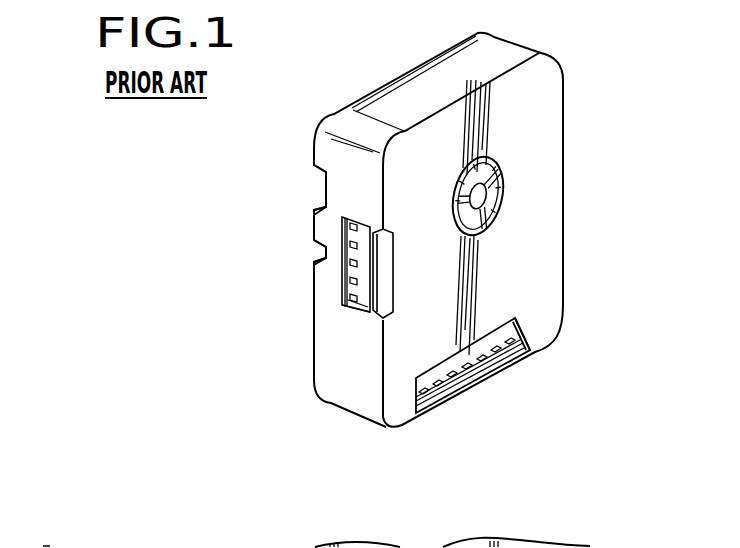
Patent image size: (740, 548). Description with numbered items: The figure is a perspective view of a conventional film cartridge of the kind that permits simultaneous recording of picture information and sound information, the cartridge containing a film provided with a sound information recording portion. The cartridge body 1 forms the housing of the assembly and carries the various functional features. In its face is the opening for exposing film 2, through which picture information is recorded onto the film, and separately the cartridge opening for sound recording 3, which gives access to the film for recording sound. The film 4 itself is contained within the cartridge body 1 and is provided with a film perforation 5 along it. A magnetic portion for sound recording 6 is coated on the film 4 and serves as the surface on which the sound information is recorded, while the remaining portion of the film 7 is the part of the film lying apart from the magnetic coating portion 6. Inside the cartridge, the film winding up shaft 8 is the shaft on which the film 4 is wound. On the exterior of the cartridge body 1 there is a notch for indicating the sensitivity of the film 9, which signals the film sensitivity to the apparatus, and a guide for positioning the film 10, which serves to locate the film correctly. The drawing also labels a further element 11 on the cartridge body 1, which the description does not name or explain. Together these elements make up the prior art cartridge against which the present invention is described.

The cartridge body 1 is at (400, 383).
The opening for exposing film 2 is at (311, 283).
The cartridge opening for sound recording 3 is at (513, 332).
The film 4 is at (353, 256).
The film perforation 5 is at (347, 305).
The magnetic portion for sound recording 6 is at (488, 381).
The remaining portion of the film 7 is at (472, 357).
The film winding up shaft 8 is at (505, 185).
The notch for indicating the sensitivity of the film 9 is at (320, 166).
The guide for positioning the film 10 is at (326, 250).
The clip 11 is at (383, 305).